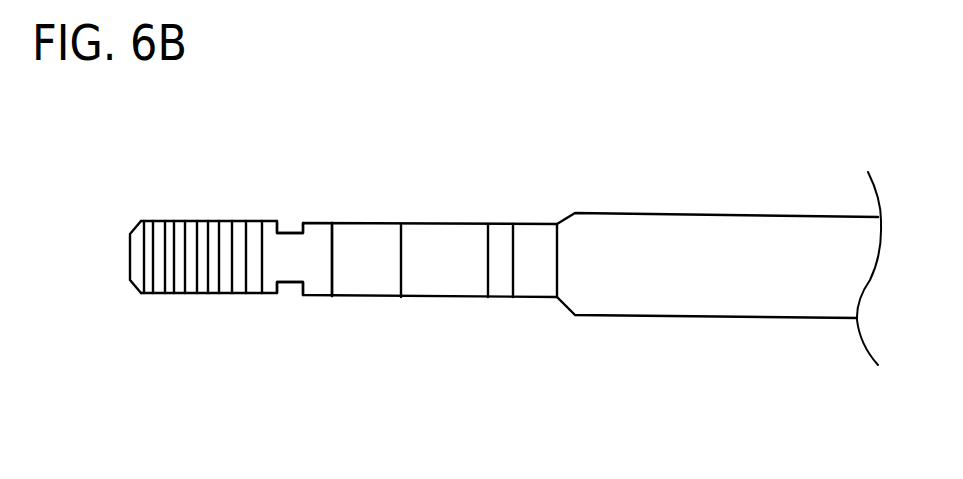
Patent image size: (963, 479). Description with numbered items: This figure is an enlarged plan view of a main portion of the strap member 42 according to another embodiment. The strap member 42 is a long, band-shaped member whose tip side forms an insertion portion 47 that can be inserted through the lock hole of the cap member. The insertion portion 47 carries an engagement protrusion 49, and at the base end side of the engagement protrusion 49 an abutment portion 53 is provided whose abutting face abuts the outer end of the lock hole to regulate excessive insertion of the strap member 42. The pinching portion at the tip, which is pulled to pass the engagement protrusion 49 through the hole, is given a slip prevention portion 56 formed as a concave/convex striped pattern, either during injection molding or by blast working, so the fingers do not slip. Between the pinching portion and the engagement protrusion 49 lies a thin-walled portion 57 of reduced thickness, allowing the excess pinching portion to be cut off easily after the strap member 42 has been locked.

The strap member 42 is at (758, 142).
The insertion portion 47 is at (318, 277).
The engagement protrusion 49 is at (380, 260).
The abutment portion 53 is at (502, 247).
The slip prevention portion 56 is at (192, 260).
The thin-walled portion 57 is at (280, 224).